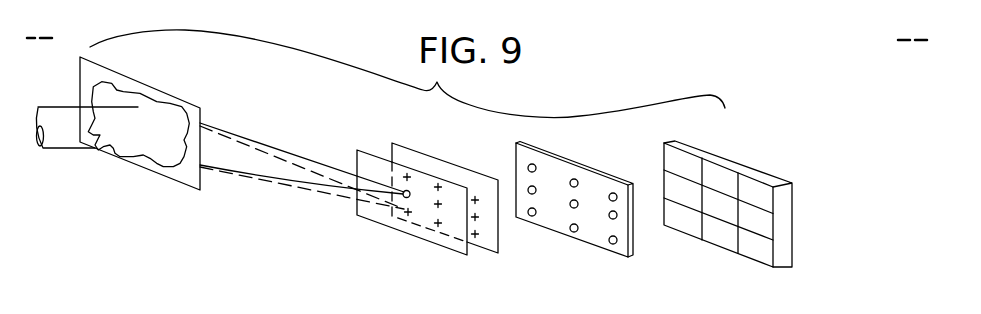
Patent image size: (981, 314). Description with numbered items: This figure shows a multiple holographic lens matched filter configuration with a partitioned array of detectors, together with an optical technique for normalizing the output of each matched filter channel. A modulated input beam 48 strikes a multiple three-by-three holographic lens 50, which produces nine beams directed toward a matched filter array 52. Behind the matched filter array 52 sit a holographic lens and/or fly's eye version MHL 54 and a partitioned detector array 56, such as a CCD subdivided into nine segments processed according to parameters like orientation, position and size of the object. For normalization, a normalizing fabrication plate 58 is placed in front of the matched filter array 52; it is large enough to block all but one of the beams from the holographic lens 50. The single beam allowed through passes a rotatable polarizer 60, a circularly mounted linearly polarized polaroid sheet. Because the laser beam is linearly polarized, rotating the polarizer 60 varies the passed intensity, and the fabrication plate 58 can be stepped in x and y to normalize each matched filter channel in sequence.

The modulated input beam 48 is at (62, 105).
The multiple holographic lens 50 is at (140, 80).
The matched filter array 52 is at (443, 160).
The holographic lens and/or fly's eye version MHL 54 is at (533, 143).
The partitioned detector array 56 is at (715, 150).
The normalizing fabrication plate 58 is at (372, 152).
The rotatable polarizer 60 is at (403, 198).